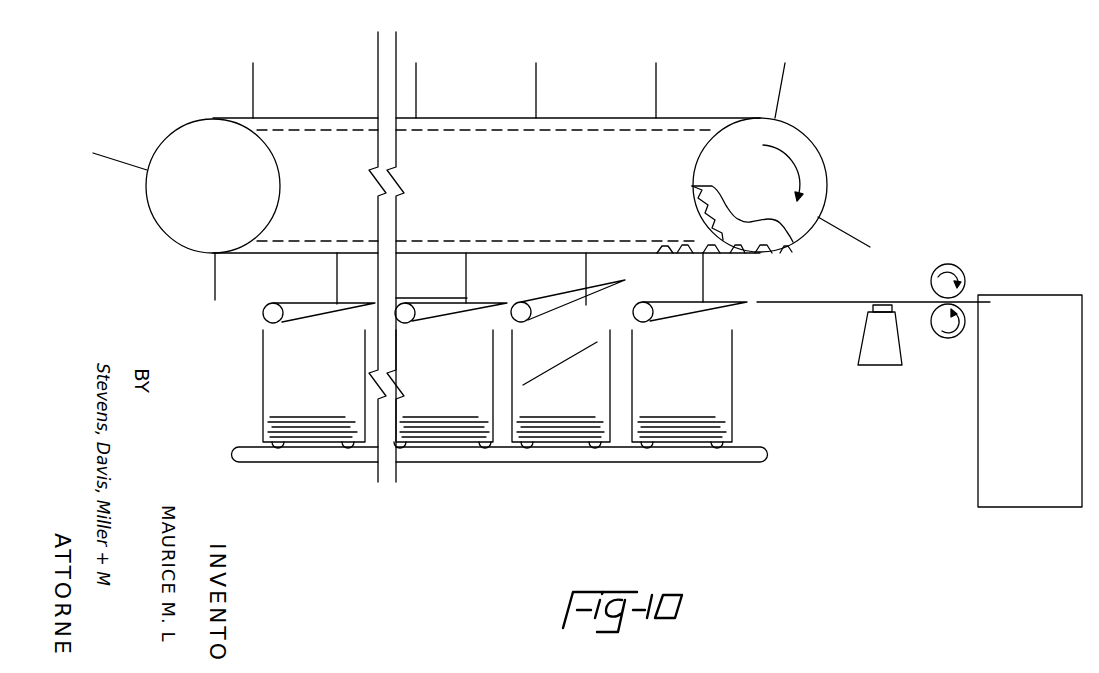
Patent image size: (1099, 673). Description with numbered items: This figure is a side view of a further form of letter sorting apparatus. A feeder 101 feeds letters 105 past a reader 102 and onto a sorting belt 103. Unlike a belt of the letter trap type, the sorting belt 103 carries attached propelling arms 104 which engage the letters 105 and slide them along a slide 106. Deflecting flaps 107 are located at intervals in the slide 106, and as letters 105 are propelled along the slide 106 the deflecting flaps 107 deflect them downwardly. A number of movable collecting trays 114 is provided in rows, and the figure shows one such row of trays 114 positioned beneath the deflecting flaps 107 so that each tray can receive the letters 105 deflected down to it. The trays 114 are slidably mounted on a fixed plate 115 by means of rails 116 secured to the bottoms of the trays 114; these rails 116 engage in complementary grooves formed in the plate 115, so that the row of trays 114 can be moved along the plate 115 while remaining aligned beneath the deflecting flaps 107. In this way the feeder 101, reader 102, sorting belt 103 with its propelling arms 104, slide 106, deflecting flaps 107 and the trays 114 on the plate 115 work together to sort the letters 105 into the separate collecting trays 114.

The feeder 101 is at (992, 462).
The reader 102 is at (878, 354).
The sorting belt 103 is at (685, 118).
The propelling arms 104 is at (850, 232).
The letters 105 is at (968, 294).
The slide 106 is at (843, 298).
The deflecting flaps 107 is at (300, 310).
The collecting trays 114 is at (733, 391).
The fixed plate 115 is at (675, 458).
The rails 116 is at (530, 450).